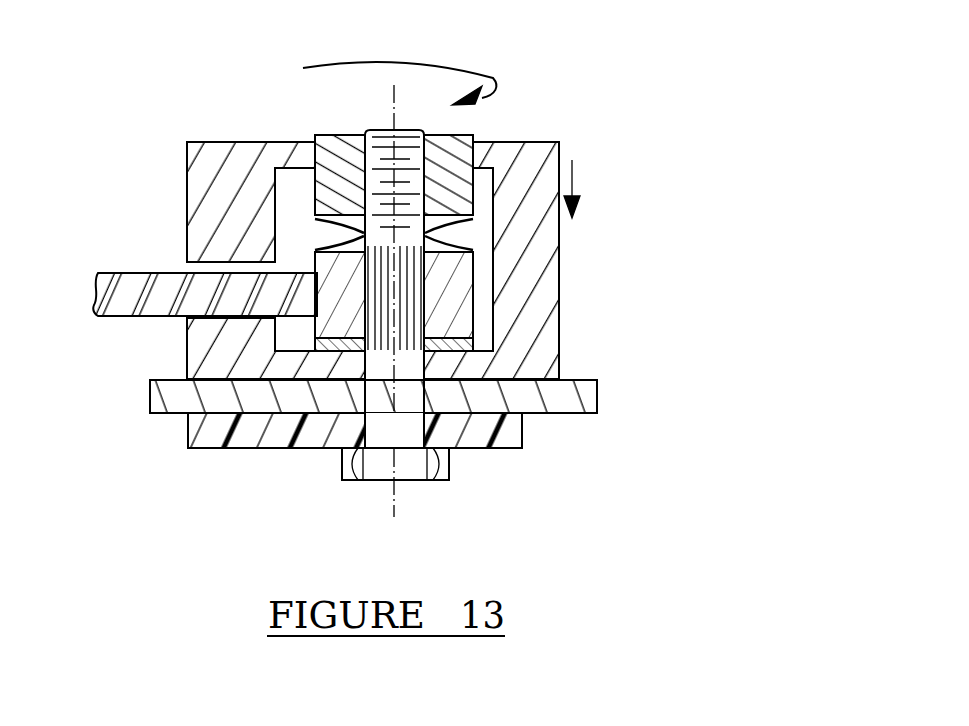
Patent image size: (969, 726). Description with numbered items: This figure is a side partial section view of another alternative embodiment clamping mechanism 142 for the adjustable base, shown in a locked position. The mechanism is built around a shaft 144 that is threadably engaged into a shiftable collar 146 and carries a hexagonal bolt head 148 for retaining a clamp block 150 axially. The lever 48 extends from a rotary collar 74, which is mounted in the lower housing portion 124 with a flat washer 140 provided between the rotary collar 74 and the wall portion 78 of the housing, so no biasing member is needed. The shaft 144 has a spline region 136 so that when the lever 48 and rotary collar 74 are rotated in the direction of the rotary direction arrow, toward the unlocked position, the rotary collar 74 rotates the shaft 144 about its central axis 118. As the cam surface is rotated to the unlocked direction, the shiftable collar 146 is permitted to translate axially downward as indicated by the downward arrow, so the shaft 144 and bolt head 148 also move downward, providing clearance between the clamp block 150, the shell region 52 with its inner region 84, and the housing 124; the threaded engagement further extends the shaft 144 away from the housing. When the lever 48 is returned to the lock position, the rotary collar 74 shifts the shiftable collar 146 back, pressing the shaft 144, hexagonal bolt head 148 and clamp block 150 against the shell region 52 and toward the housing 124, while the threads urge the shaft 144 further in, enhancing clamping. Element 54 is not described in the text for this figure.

The clamping mechanism 142 is at (546, 60).
The shiftable collar 146 is at (331, 135).
The lower housing portion 124 is at (562, 152).
The spline region 136 is at (363, 300).
The lever 48 is at (110, 273).
The rotary collar 74 is at (473, 273).
The flat washer 140 is at (473, 350).
The wall portion 78 is at (202, 368).
The longitudinal shell 52 is at (148, 392).
The upper surface of plate 54 is at (590, 378).
The inner region 84 is at (590, 416).
The clamp block 150 is at (185, 427).
The shaft 144 is at (427, 430).
The hexagonal bolt head 148 is at (342, 462).
The central axis 118 is at (394, 508).